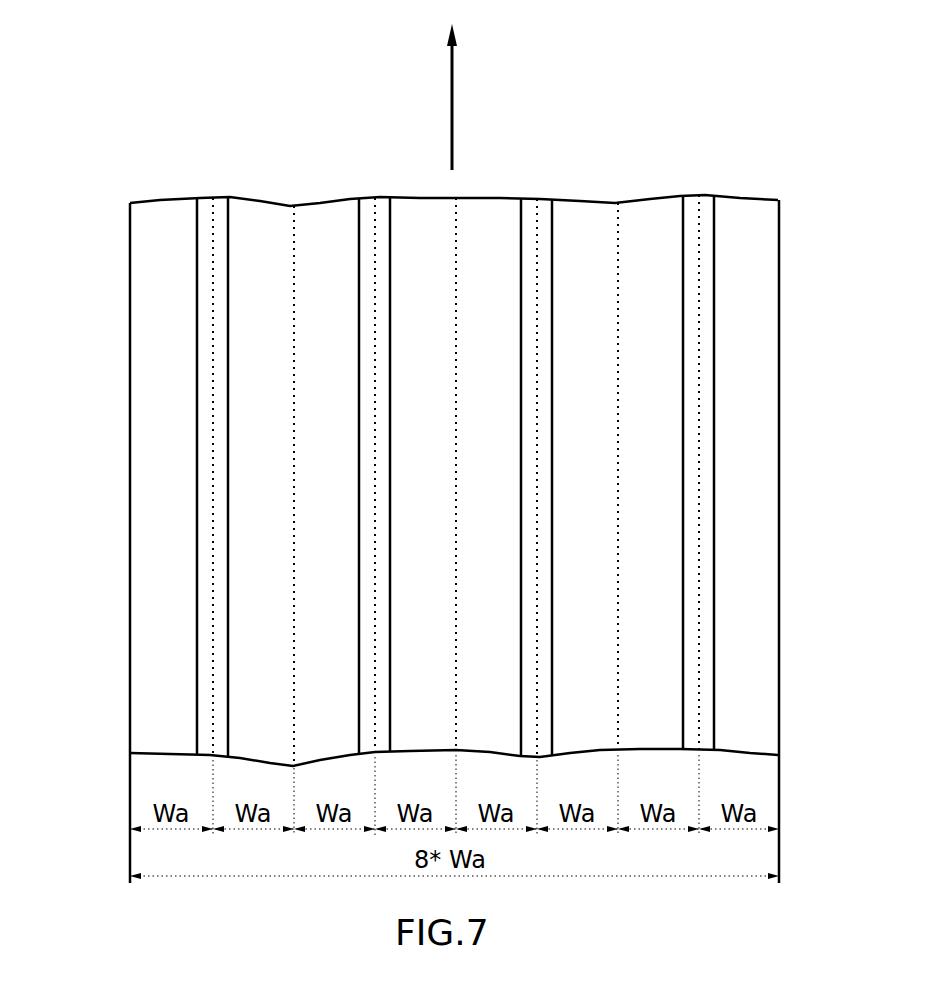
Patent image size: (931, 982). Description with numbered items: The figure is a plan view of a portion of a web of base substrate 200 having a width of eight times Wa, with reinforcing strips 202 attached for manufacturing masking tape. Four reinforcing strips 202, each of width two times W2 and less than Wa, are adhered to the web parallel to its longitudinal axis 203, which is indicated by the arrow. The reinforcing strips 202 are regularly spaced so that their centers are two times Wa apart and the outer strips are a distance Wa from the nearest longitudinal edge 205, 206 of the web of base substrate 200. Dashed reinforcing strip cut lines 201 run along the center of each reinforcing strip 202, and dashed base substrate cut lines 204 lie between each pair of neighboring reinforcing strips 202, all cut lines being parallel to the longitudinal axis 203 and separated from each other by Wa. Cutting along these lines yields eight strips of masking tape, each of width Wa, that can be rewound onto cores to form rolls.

The web of base substrate 200 is at (148, 223).
The reinforcing strip cut lines 201 is at (700, 222).
The reinforcing strips 202 is at (371, 242).
The longitudinal axis 203 is at (452, 72).
The base substrate cut lines 204 is at (617, 230).
The longitudinal edge 205 is at (780, 472).
The longitudinal edge 206 is at (130, 565).